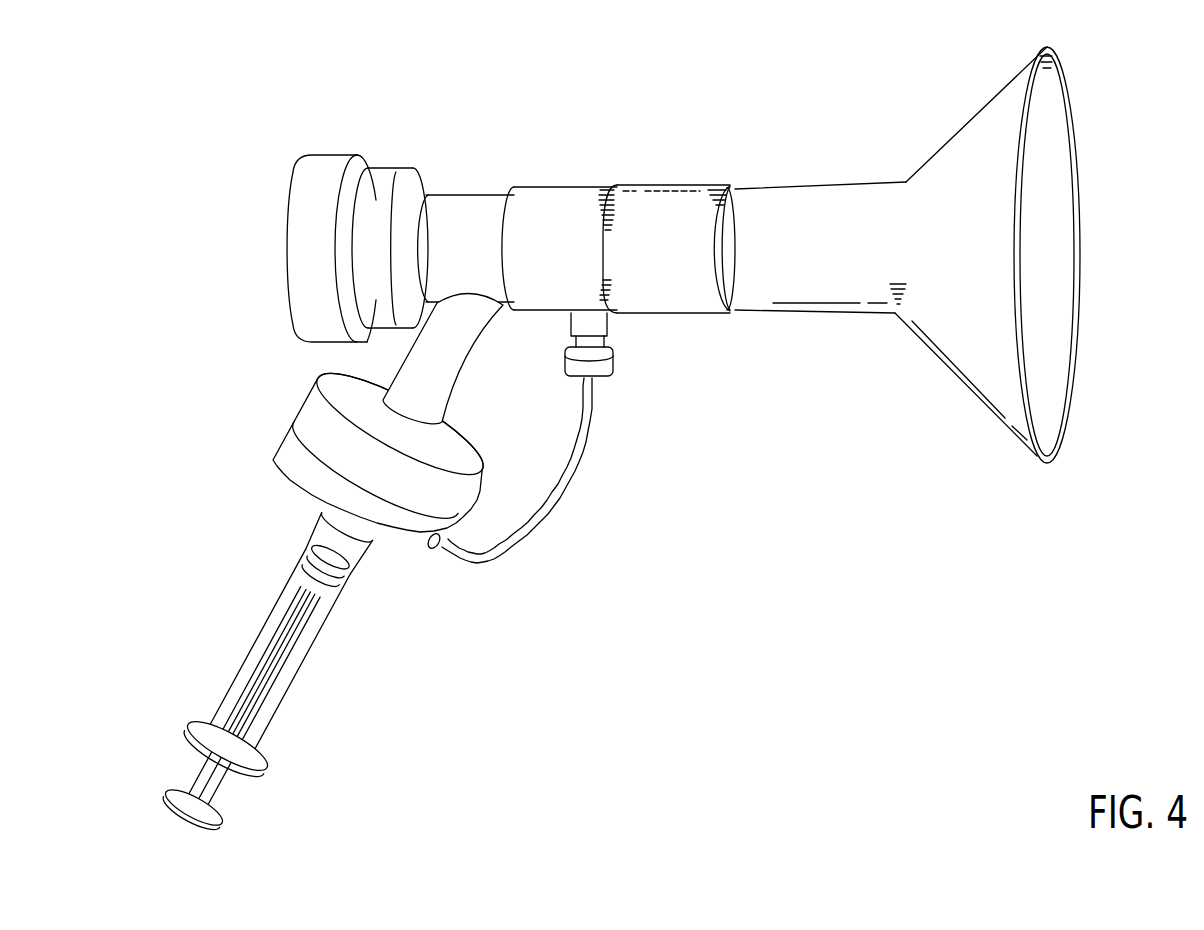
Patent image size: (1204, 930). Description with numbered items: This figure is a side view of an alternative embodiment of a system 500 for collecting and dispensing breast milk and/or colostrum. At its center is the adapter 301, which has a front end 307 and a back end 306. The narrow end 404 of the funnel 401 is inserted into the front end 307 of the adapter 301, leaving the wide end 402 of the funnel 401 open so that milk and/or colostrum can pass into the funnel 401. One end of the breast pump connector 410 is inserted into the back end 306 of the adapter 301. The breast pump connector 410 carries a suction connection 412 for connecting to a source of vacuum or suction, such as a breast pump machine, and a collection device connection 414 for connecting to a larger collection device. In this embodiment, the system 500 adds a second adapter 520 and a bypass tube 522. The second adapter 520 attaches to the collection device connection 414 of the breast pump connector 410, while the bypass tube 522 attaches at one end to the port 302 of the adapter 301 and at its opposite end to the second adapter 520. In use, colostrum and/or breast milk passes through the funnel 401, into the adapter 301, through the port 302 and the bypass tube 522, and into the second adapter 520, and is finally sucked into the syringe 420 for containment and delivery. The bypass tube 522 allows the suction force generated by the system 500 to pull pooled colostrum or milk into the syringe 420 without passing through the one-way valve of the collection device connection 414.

The system 500 is at (880, 78).
The suction connection 412 is at (289, 258).
The breast pump connector 410 is at (447, 193).
The back end 306 is at (510, 189).
The adapter 301 is at (600, 186).
The port 302 is at (602, 323).
The front end 307 is at (717, 186).
The narrow end 404 is at (733, 233).
The funnel 401 is at (953, 134).
The wide end 402 is at (1058, 312).
The collection device connection 414 is at (310, 395).
The second adapter 520 is at (400, 548).
The bypass tube 522 is at (563, 467).
The syringe 420 is at (302, 713).